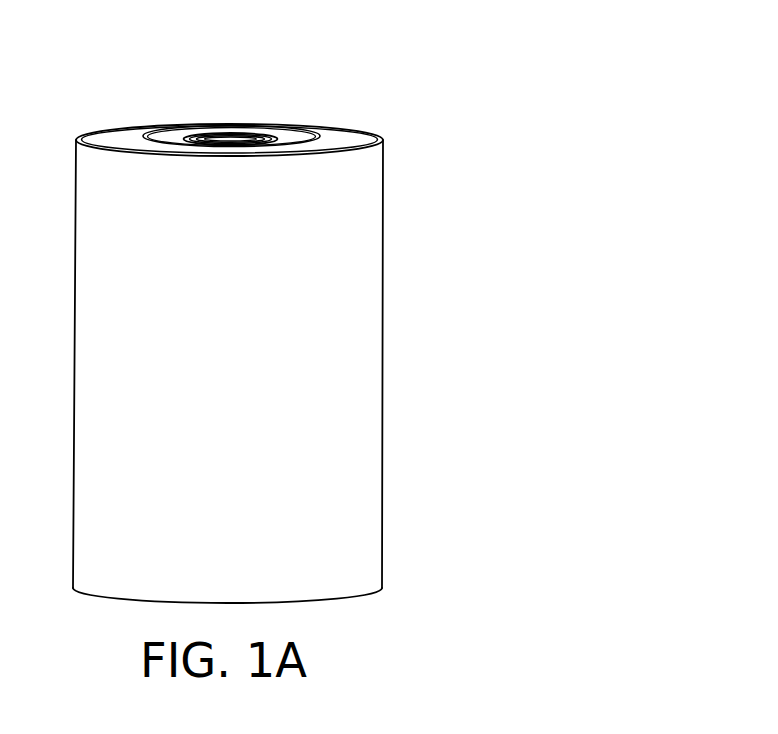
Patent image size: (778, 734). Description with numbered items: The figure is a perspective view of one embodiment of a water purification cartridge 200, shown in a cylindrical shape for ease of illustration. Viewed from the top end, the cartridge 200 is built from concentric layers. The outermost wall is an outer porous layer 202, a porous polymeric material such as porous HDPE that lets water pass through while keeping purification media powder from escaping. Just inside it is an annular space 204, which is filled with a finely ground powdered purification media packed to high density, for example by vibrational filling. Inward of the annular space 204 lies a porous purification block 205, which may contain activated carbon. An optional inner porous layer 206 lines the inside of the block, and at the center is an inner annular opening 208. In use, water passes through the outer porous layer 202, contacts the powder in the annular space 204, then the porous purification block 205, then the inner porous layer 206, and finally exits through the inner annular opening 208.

The cartridge 200 is at (362, 528).
The outer porous layer 202 is at (380, 137).
The annular space 204 is at (320, 133).
The porous purification block 205 is at (165, 133).
The inner porous layer 206 is at (190, 135).
The inner annular opening 208 is at (228, 135).